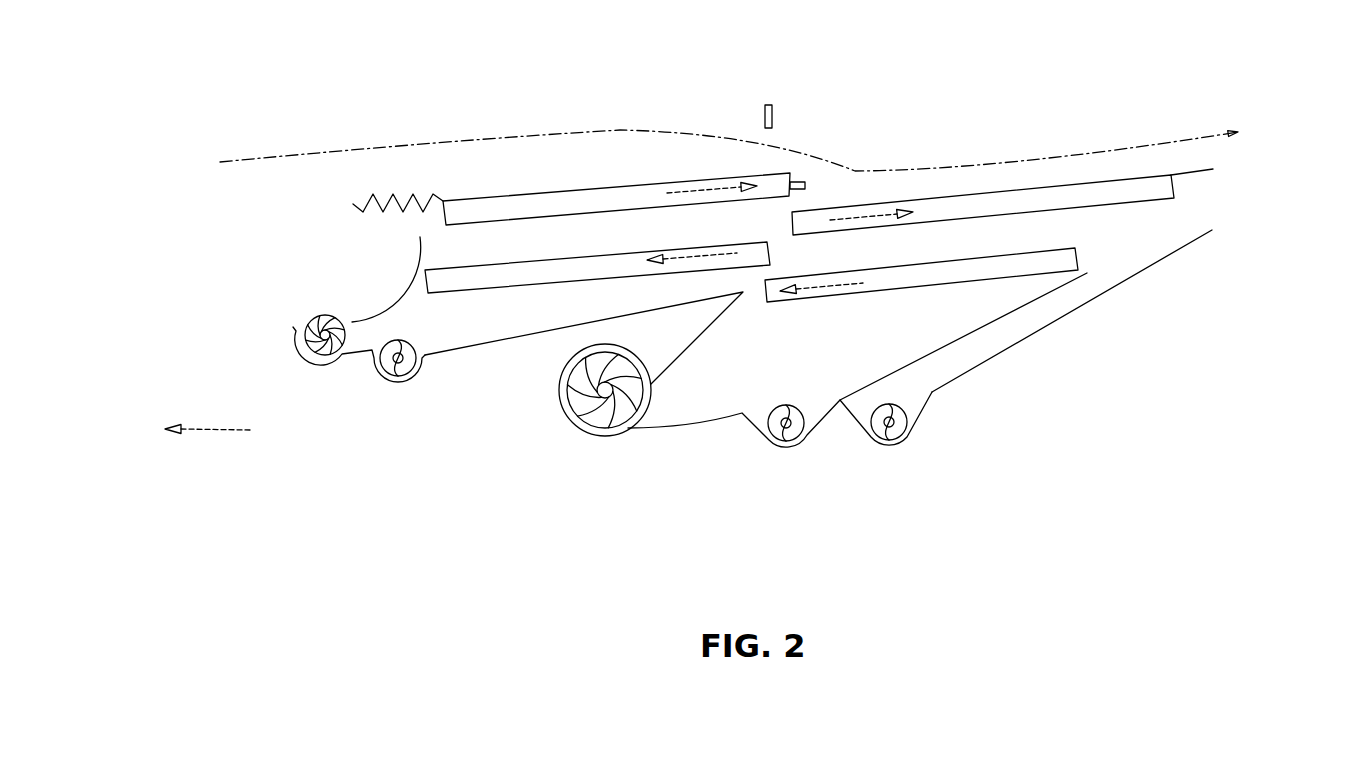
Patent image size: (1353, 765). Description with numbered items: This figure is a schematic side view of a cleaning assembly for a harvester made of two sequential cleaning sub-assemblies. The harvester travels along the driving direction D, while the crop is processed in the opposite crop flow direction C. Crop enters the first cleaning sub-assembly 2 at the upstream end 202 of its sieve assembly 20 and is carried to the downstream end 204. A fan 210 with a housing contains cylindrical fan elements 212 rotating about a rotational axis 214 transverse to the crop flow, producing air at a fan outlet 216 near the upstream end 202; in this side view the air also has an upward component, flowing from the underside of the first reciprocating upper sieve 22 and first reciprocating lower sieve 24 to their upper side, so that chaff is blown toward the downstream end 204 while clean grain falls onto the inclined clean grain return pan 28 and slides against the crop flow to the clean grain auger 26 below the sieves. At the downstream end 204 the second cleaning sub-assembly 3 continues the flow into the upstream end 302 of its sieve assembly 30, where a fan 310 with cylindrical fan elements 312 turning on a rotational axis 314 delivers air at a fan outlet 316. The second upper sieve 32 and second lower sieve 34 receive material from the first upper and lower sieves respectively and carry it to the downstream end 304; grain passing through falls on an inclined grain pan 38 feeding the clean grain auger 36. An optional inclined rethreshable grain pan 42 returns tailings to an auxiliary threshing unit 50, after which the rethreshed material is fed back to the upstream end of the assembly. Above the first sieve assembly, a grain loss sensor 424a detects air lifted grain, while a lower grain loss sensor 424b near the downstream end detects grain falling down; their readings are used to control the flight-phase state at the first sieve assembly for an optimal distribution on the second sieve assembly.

The first cleaning sub-assembly 2 is at (275, 435).
The second cleaning sub-assembly 3 is at (1092, 460).
The sieve assembly 20 is at (452, 160).
The first reciprocating upper sieve 22 is at (543, 193).
The first reciprocating lower sieve 24 is at (523, 283).
The clean grain auger 26 is at (390, 383).
The inclined clean grain return pan 28 is at (463, 350).
The sieve assembly 30 is at (1035, 160).
The second upper sieve 32 is at (922, 212).
The second lower sieve 34 is at (900, 292).
The clean grain auger 36 is at (798, 450).
The guide plate 38 is at (990, 325).
The inclined rethreshable grain pan 42 is at (1120, 283).
The auxiliary threshing unit 50 is at (908, 438).
The upstream end 202 is at (330, 208).
The downstream end 204 is at (815, 172).
The fan 210 is at (290, 316).
The cylindrical fan elements 212 is at (303, 340).
The rotational axis 214 is at (335, 358).
The fan outlet 216 is at (417, 341).
The upstream end 302 is at (768, 242).
The downstream end 304 is at (1218, 180).
The fan 310 is at (591, 462).
The cylindrical fan elements 312 is at (627, 430).
The rotational axis 314 is at (577, 430).
The fan outlet 316 is at (743, 371).
The grain loss sensor 424a is at (763, 127).
The grain loss sensor 424b is at (793, 180).
The crop flow direction C is at (302, 157).
The driving direction D is at (207, 416).